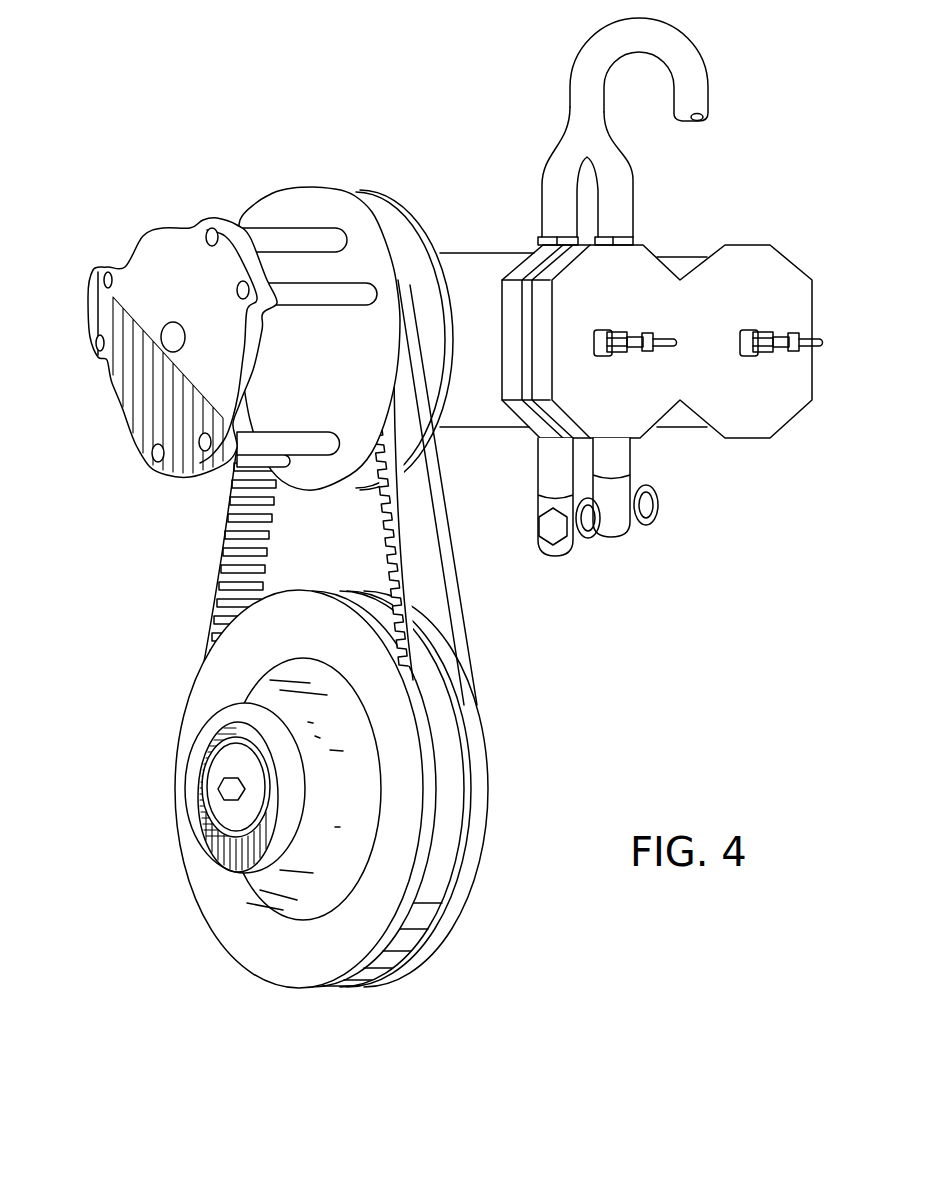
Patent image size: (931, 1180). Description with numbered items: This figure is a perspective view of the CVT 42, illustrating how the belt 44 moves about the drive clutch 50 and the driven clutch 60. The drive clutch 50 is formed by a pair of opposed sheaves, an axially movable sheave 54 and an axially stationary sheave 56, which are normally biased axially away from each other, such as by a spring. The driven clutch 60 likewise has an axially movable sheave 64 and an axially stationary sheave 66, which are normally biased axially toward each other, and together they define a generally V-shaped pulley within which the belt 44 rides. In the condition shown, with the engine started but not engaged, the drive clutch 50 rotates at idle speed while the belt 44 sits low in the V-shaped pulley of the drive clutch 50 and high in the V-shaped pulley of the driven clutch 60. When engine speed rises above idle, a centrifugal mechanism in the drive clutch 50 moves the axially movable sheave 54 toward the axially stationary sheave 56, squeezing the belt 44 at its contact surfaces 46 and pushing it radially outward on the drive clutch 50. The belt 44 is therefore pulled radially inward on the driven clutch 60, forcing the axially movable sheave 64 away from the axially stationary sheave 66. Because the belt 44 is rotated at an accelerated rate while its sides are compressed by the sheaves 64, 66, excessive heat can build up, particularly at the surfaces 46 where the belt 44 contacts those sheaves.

The CVT 42 is at (148, 588).
The endless belt 44 is at (352, 520).
The contact surfaces 46 is at (227, 567).
The drive clutch 50 is at (141, 223).
The axially movable sheave 54 is at (268, 195).
The axially stationary sheave 56 is at (420, 212).
The driven clutch 60 is at (194, 957).
The axially movable sheave 64 is at (484, 738).
The axially stationary sheave 66 is at (183, 720).